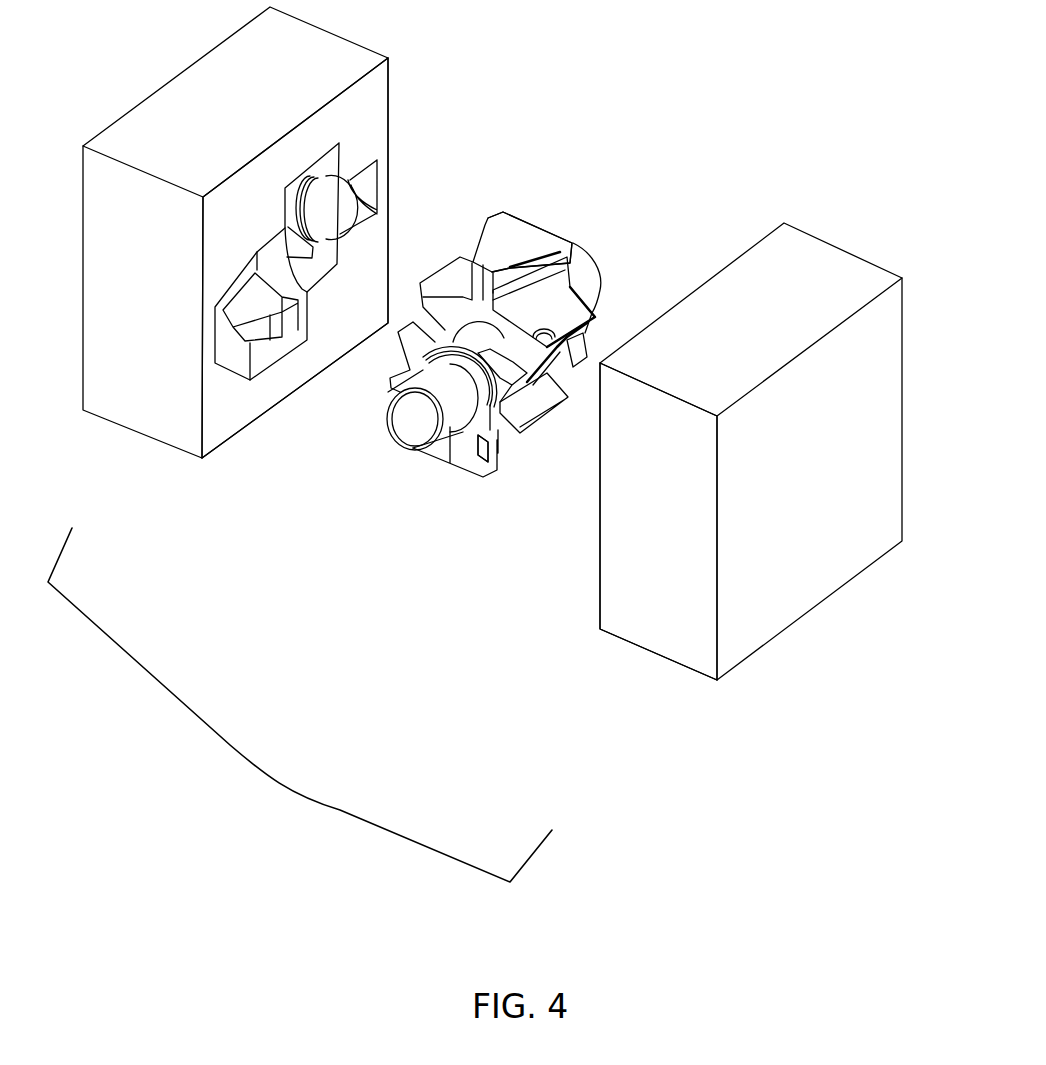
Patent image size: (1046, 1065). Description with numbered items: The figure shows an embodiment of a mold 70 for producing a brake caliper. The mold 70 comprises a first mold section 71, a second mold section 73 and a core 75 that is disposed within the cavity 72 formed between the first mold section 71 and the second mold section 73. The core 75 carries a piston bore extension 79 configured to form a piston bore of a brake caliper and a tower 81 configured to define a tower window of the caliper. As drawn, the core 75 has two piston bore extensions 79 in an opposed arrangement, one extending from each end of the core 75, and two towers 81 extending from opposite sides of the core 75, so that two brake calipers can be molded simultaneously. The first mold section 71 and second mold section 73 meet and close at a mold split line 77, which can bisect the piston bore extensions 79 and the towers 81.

The mold 70 is at (265, 833).
The first mold section 71 is at (295, 232).
The cavity 72 is at (357, 200).
The second mold section 73 is at (820, 268).
The core 75 is at (547, 326).
The mold split line 77 is at (222, 445).
The piston bore extension 79 is at (583, 278).
The tower 81 is at (523, 217).